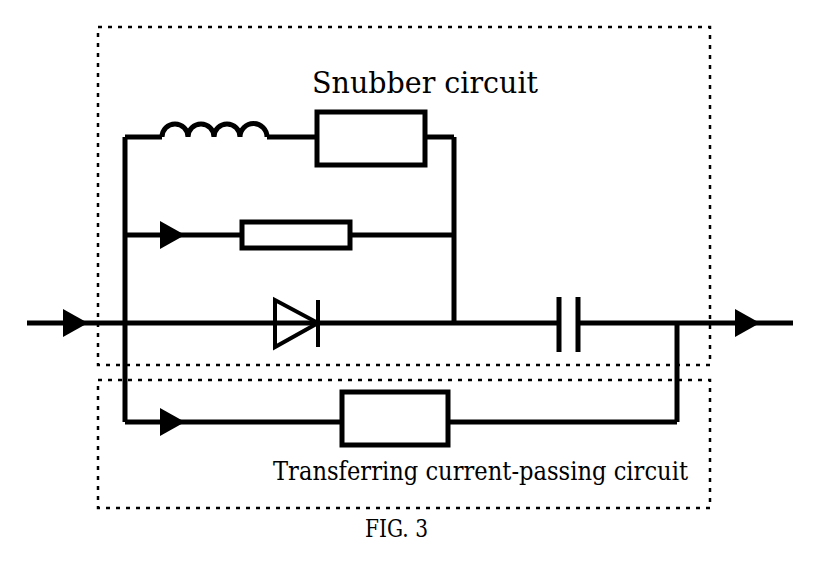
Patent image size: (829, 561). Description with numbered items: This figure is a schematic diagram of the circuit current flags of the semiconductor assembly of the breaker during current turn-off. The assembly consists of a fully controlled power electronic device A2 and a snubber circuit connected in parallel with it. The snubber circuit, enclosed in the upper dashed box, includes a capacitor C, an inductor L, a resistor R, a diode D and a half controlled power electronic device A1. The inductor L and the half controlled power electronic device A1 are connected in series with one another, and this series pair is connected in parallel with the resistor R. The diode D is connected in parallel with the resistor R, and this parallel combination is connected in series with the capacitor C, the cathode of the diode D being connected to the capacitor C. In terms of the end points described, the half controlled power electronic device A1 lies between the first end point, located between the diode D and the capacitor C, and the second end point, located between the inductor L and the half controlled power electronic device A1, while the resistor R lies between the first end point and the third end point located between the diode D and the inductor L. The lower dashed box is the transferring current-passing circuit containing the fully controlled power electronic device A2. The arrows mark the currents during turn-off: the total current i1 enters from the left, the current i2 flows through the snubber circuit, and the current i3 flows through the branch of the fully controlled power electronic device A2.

The inductor L is at (214, 111).
The resistor R is at (296, 214).
The diode D is at (296, 308).
The capacitor C is at (569, 308).
The half controlled power electronic device A1 is at (371, 138).
The fully controlled power electronic device A2 is at (395, 418).
The total current i1 is at (67, 346).
The current flowing through the snubber circuit i2 is at (173, 254).
The current flowing through the branch of the fully controlled power electronic devi i3 is at (174, 449).